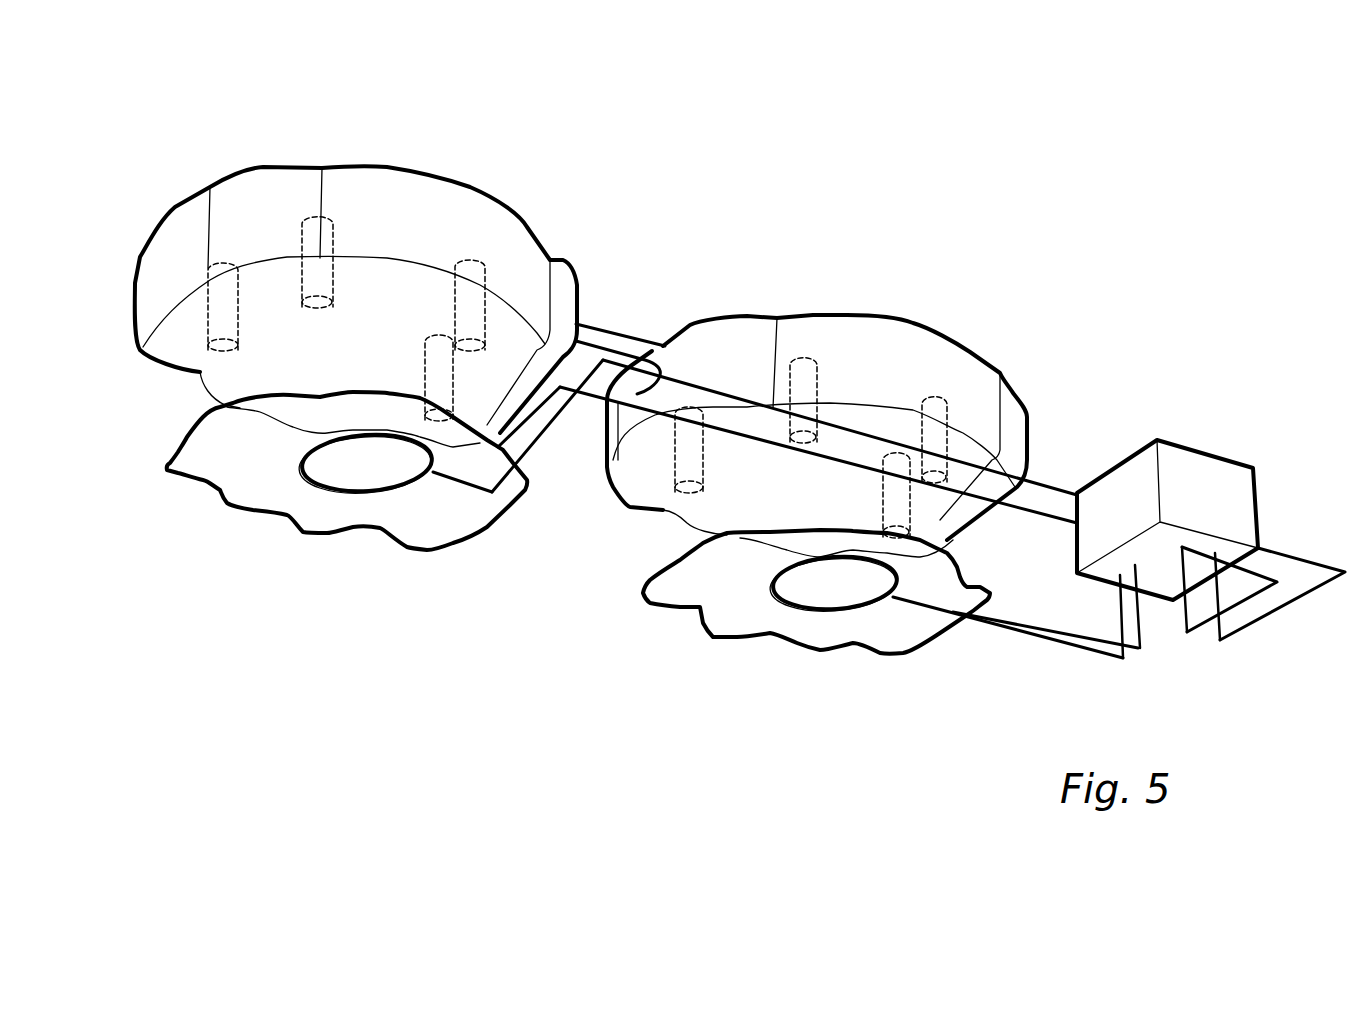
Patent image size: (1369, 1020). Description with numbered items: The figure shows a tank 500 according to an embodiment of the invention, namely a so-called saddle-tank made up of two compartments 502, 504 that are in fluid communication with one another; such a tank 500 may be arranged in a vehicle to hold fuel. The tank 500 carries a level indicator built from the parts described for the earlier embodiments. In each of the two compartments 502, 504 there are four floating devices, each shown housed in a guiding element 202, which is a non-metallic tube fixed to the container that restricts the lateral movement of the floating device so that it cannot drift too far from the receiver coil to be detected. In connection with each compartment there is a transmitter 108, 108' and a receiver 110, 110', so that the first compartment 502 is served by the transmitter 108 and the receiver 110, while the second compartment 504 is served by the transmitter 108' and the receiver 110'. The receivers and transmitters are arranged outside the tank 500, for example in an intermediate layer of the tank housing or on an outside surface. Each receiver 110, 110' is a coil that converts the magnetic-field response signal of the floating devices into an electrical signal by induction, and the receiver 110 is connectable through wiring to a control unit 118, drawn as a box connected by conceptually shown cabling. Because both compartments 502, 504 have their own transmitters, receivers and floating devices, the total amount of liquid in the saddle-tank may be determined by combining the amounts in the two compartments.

The tank 500 is at (806, 168).
The compartment 502 is at (288, 168).
The compartment 504 is at (882, 316).
The guiding element 202 is at (481, 271).
The transmitter 108 is at (294, 471).
The receiver coil 110 is at (365, 526).
The transmitter 108' is at (816, 631).
The receiver 110' is at (821, 642).
The control unit 118 is at (1195, 445).